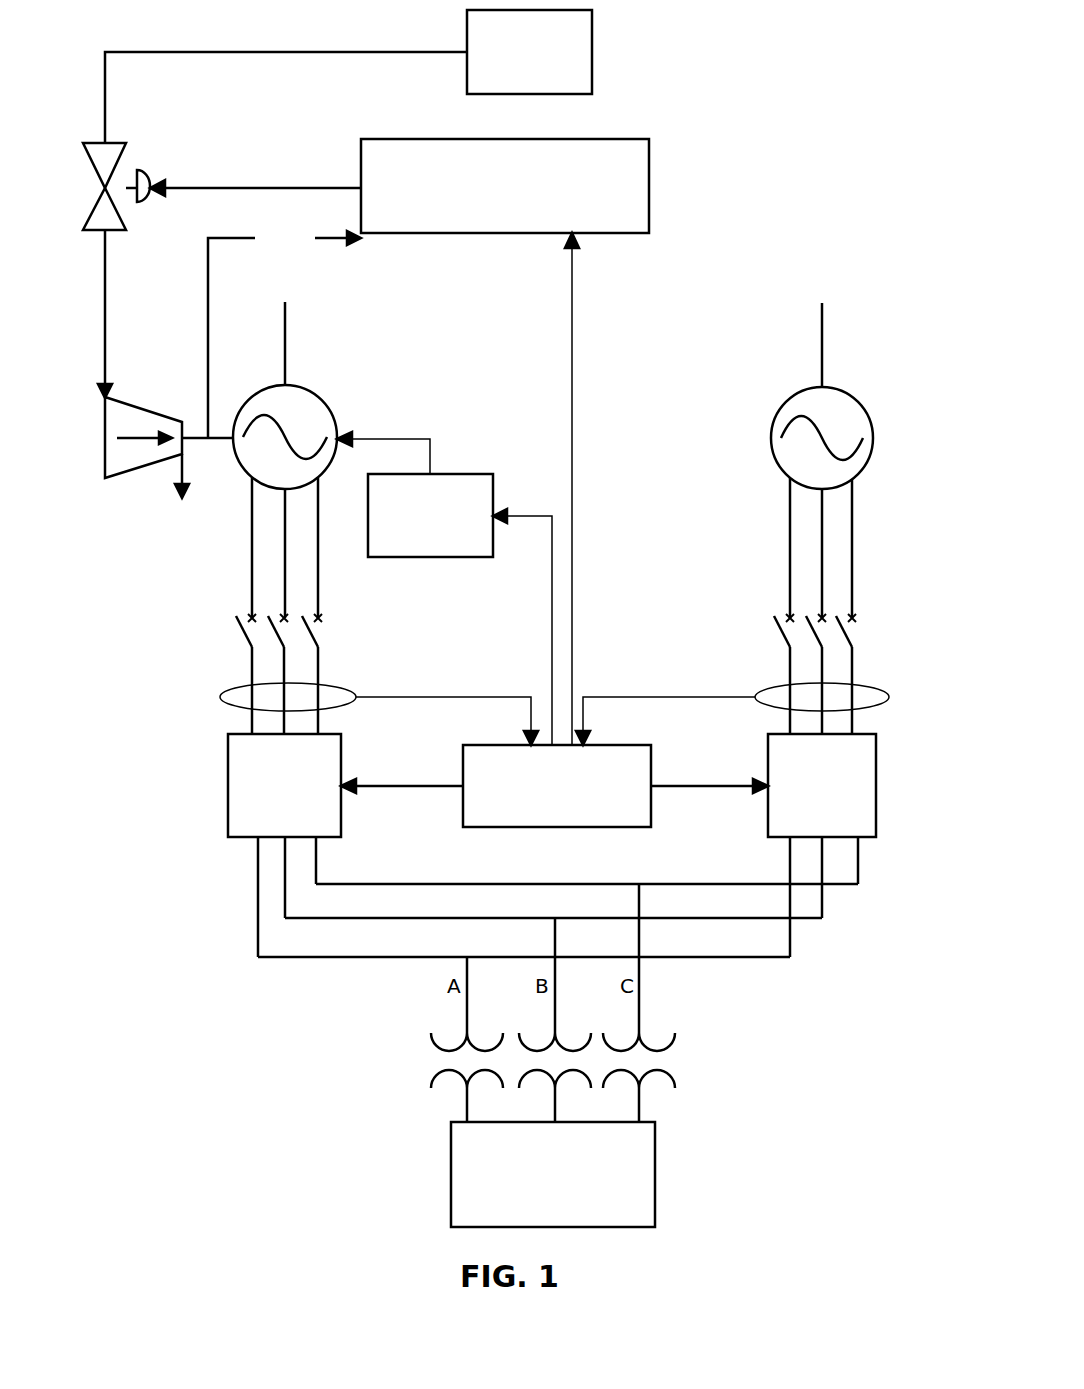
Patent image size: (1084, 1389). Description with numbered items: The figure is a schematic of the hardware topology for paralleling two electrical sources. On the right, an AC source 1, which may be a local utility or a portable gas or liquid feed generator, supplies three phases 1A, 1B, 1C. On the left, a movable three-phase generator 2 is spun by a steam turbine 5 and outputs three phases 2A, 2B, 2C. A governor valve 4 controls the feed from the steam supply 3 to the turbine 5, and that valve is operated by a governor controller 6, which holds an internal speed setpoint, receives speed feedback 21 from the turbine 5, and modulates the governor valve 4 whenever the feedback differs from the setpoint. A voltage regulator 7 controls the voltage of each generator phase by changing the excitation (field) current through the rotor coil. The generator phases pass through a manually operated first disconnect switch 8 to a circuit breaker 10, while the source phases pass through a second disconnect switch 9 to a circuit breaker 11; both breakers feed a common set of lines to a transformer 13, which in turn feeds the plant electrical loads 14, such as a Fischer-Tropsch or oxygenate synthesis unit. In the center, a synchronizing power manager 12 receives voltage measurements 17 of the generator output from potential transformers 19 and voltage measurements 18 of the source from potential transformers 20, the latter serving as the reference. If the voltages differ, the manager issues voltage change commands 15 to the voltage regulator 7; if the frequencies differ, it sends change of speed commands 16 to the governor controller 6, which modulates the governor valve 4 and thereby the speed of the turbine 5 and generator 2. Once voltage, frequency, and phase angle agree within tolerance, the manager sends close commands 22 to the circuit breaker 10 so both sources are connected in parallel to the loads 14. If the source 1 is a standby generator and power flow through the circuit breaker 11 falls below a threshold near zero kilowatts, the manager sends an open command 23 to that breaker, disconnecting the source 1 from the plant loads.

The AC source 1 is at (800, 381).
The source phase A 1A is at (791, 548).
The source phase B 1B is at (824, 553).
The source phase C 1C is at (856, 548).
The generator 2 is at (319, 395).
The generator output phase A 2A is at (253, 548).
The generator output phase B 2B is at (285, 553).
The generator output phase C 2C is at (319, 548).
The steam supply 3 is at (348, 76).
The governor valve 4 is at (222, 249).
The steam turbine 5 is at (157, 437).
The governor controller 6 is at (505, 186).
The voltage regulator 7 is at (415, 488).
The first disconnect switch 8 is at (242, 661).
The second disconnect switch 9 is at (810, 661).
The circuit breaker 10 is at (265, 845).
The circuit breaker 11 is at (838, 845).
The synchronizing power manager 12 is at (540, 786).
The transformer 13 is at (531, 1077).
The plant electrical loads 14 is at (537, 1174).
The voltage change commands 15 is at (518, 627).
The change of speed commands 16 is at (586, 489).
The voltage measurements 17 is at (447, 698).
The voltage measurements 18 is at (665, 699).
The potential transformers 19 is at (272, 697).
The potential transformers 20 is at (836, 697).
The speed feedback 21 is at (284, 324).
The close commands 22 is at (402, 762).
The open command 23 is at (709, 763).